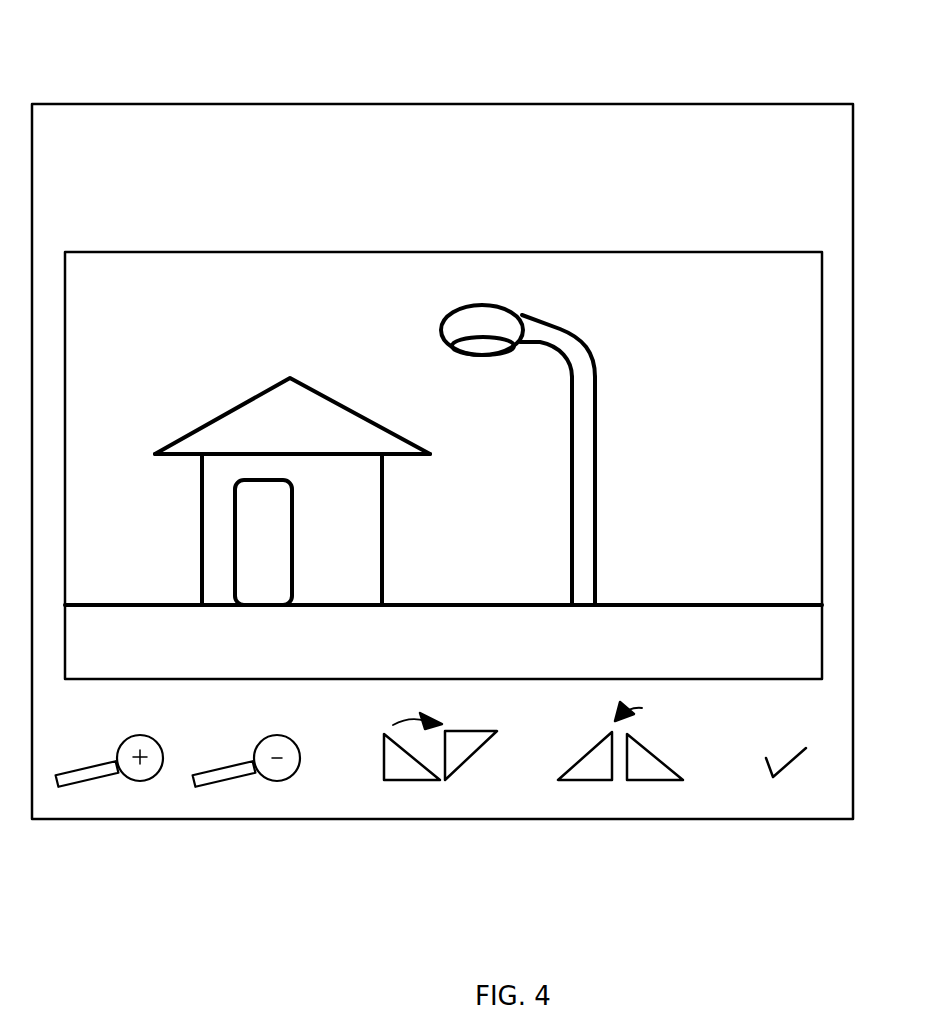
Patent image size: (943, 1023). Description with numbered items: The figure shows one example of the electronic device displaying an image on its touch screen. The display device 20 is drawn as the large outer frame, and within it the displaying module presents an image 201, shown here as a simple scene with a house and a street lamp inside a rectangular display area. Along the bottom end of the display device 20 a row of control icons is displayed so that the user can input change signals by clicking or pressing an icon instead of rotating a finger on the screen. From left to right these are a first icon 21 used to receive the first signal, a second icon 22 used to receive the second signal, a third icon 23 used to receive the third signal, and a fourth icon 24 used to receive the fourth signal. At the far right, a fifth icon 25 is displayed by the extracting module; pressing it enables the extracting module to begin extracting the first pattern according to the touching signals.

The display device 20 is at (402, 104).
The image 201 is at (515, 252).
The first icon 21 is at (153, 740).
The second icon 22 is at (261, 740).
The third icon 23 is at (469, 731).
The fourth icon 24 is at (655, 752).
The fifth icon 25 is at (773, 757).